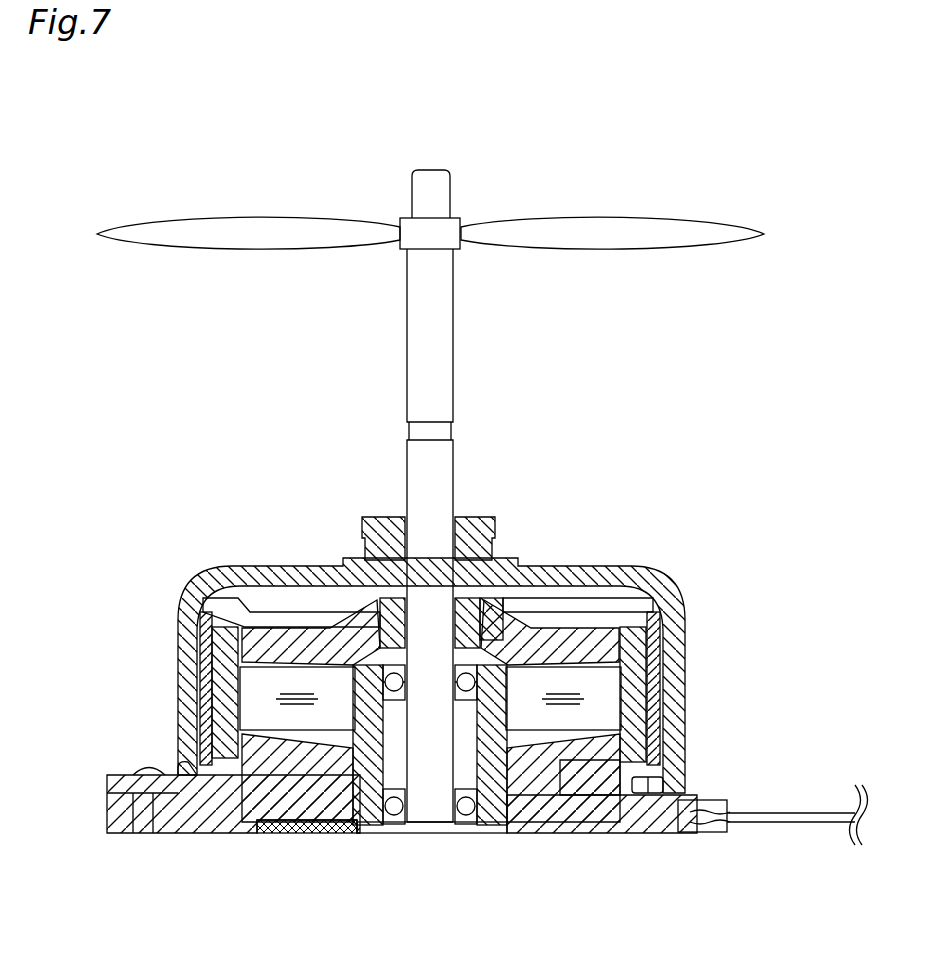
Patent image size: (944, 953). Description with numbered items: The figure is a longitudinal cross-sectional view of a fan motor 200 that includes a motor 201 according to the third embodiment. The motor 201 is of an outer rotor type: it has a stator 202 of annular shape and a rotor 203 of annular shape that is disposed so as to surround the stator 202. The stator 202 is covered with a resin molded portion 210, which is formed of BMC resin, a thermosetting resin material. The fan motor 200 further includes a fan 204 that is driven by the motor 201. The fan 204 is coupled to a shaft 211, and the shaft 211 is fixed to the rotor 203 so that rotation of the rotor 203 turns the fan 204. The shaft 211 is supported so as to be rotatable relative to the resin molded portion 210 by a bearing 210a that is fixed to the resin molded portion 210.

The fan motor 200 is at (166, 164).
The motor 201 is at (612, 590).
The stator 202 is at (607, 621).
The rotor 203 is at (660, 678).
The fan 204 is at (597, 226).
The resin molded portion 210 is at (563, 838).
The bearing 210a is at (383, 663).
The shaft 211 is at (444, 377).